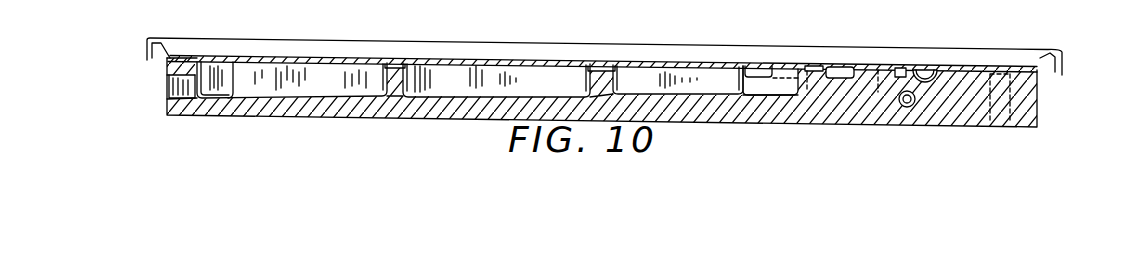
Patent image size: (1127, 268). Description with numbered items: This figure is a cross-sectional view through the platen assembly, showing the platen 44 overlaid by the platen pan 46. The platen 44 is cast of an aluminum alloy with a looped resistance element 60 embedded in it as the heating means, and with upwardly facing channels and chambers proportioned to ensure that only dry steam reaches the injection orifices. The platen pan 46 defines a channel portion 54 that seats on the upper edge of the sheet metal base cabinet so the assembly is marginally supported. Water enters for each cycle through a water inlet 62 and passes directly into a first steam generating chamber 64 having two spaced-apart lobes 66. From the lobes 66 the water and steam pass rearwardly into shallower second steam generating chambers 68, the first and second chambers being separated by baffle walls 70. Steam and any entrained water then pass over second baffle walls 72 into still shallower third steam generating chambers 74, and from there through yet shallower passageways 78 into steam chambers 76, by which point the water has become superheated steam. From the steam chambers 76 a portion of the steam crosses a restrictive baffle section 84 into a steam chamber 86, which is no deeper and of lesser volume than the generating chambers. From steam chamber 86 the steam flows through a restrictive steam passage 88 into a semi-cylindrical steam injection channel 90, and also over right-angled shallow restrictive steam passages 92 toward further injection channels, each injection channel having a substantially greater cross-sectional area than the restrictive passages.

The platen 44 is at (1030, 103).
The platen pan 46 is at (987, 67).
The channel portion 54 is at (244, 40).
The looped resistance element 60 is at (910, 107).
The water inlet 62 is at (178, 99).
The first steam generating chamber 64 is at (287, 88).
The lobes 66 is at (337, 90).
The second steam generating chambers 68 is at (556, 91).
The baffle walls 70 is at (397, 72).
The second baffle walls 72 is at (598, 75).
The third steam generating chambers 74 is at (657, 91).
The steam chambers 76 is at (759, 83).
The passageways 78 is at (759, 74).
The restrictive baffle section 84 is at (807, 70).
The steam chamber 86 is at (873, 72).
The restrictive steam passage 88 is at (907, 80).
The semi-cylindrical steam injection channel 90 is at (935, 68).
The right-angled shallow restrictive steam passages 92 is at (838, 67).